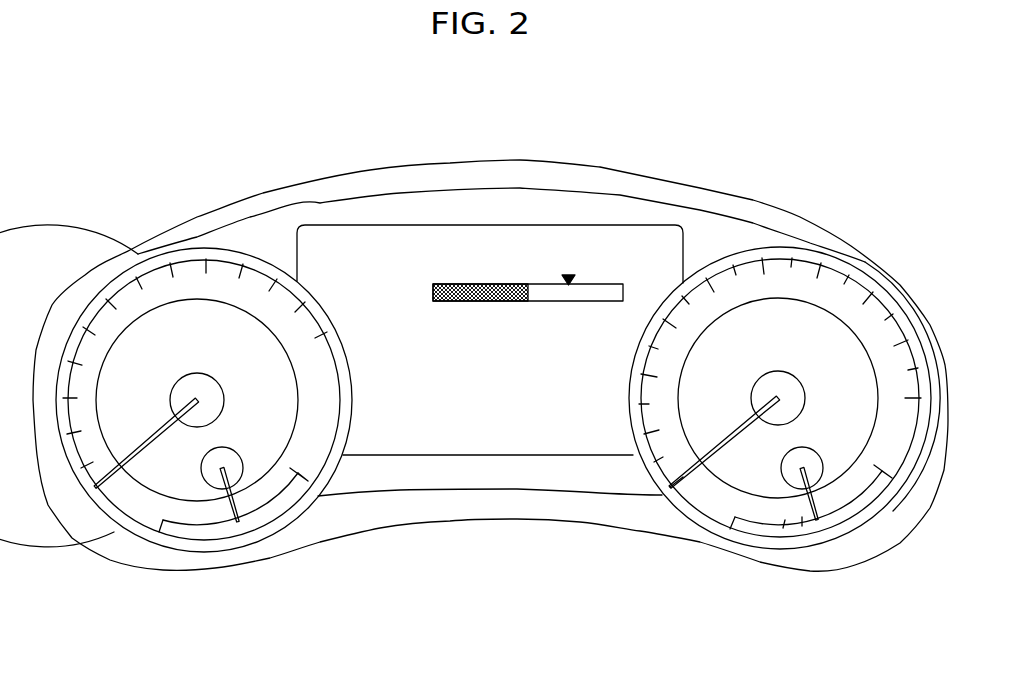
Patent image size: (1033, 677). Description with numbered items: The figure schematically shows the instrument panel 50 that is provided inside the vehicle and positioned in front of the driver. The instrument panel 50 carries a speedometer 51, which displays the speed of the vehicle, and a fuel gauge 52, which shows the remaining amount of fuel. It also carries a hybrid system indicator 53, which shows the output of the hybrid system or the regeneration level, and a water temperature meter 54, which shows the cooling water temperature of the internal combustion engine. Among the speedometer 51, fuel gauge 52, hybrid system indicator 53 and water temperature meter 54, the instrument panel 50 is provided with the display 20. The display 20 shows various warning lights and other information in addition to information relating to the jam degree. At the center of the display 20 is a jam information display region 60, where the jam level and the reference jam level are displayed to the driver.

The instrument panel 50 is at (402, 153).
The display 20 is at (350, 245).
The jam information display region 60 is at (508, 263).
The speedometer 51 is at (853, 290).
The fuel gauge 52 is at (805, 517).
The hybrid system indicator 53 is at (150, 297).
The water temperature meter 54 is at (257, 500).